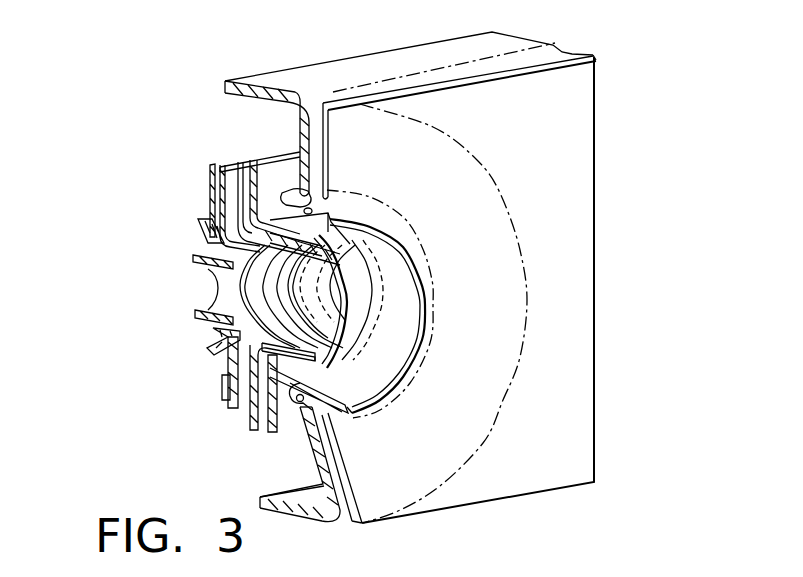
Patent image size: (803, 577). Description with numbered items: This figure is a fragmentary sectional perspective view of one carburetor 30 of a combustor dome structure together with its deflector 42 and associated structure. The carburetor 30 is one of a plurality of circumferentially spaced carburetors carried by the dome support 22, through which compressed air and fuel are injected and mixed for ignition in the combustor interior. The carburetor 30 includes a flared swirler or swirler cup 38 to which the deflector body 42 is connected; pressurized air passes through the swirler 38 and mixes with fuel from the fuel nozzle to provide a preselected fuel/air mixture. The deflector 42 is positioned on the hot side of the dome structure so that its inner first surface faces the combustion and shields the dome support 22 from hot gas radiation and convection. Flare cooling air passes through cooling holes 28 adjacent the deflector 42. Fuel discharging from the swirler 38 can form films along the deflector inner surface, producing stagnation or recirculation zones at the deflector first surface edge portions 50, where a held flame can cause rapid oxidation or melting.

The dome support 22 is at (506, 44).
The cooling holes 28 is at (278, 193).
The carburetor 30 is at (183, 292).
The flared swirler 38 is at (392, 338).
The deflector body 42 is at (562, 432).
The deflector first surface edge portions 50 is at (461, 284).